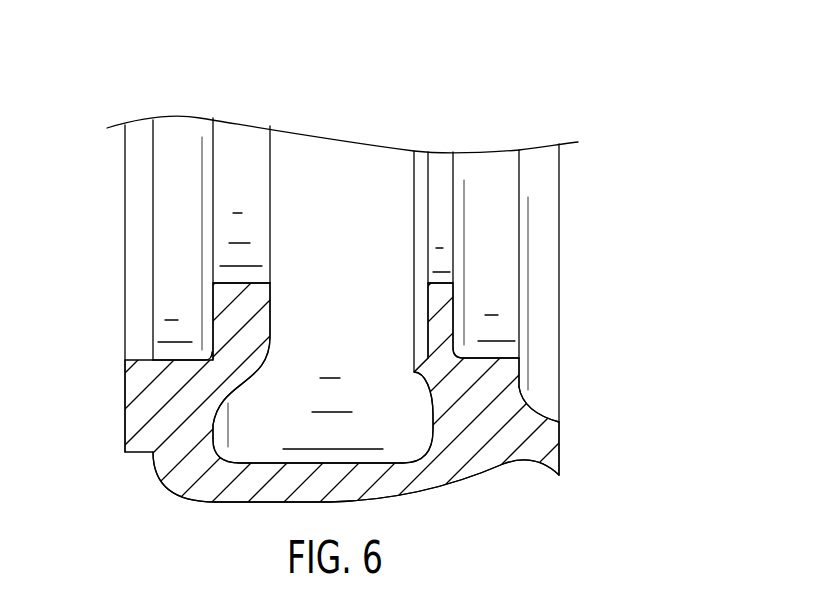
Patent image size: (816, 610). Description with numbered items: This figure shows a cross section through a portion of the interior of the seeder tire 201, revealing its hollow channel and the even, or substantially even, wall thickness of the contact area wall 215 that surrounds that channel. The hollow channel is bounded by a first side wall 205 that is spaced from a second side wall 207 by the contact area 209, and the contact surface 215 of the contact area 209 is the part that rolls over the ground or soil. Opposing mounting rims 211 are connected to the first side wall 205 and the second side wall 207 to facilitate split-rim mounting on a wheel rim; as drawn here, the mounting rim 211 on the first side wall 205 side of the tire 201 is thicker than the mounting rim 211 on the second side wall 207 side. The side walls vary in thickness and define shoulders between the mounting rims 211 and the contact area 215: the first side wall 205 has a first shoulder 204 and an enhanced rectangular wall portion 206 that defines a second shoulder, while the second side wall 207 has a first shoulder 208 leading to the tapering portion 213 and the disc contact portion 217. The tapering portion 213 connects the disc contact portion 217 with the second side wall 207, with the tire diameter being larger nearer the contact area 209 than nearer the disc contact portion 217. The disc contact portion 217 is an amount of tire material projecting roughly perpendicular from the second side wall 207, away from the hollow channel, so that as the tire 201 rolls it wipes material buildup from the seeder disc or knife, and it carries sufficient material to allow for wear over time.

The seeder tire 201 is at (418, 75).
The first shoulder 204 is at (180, 132).
The first side wall 205 is at (125, 425).
The enhanced rectangular wall portion 206 is at (137, 157).
The second side wall 207 is at (522, 293).
The first shoulder 208 is at (486, 165).
The contact area 209 is at (418, 488).
The mounting rim 211 is at (440, 167).
The tapering portion 213 is at (533, 403).
The contact surface 215 is at (300, 505).
The disc contact portion 217 is at (560, 453).